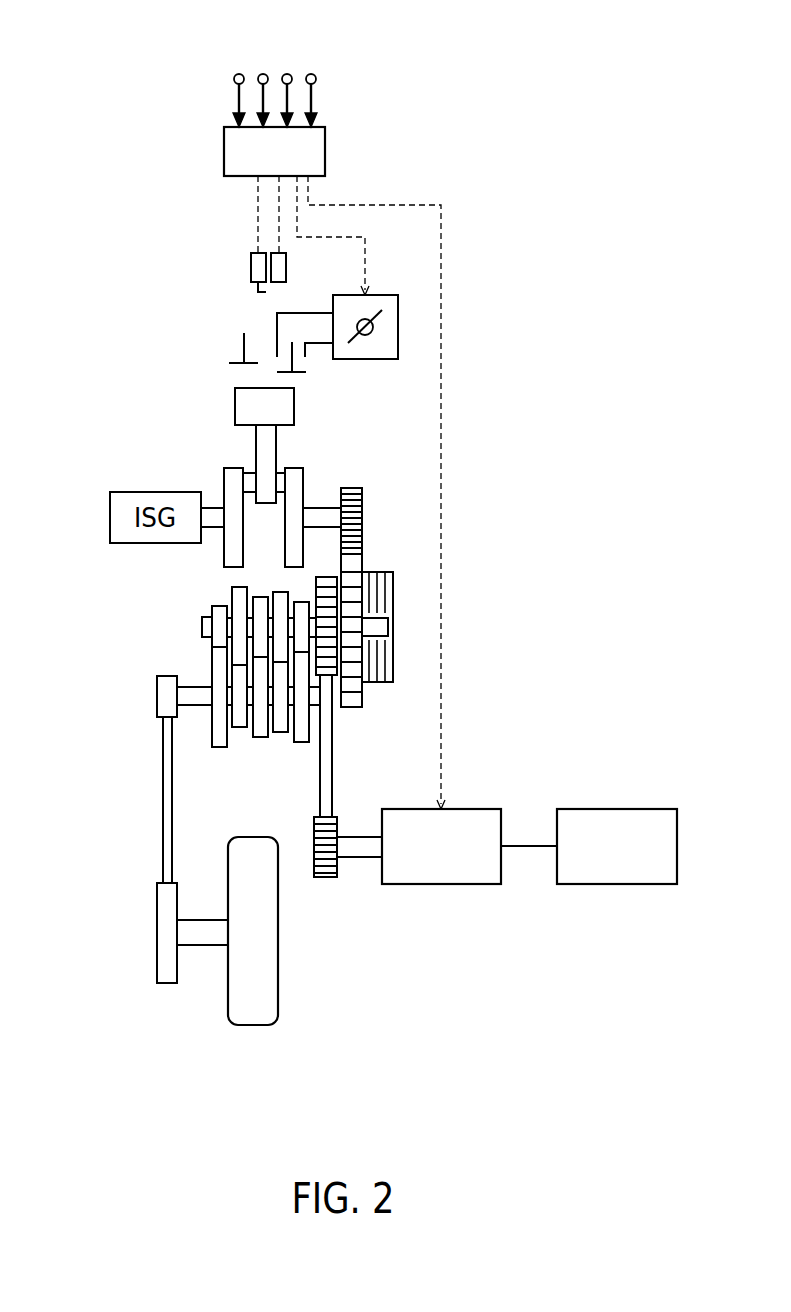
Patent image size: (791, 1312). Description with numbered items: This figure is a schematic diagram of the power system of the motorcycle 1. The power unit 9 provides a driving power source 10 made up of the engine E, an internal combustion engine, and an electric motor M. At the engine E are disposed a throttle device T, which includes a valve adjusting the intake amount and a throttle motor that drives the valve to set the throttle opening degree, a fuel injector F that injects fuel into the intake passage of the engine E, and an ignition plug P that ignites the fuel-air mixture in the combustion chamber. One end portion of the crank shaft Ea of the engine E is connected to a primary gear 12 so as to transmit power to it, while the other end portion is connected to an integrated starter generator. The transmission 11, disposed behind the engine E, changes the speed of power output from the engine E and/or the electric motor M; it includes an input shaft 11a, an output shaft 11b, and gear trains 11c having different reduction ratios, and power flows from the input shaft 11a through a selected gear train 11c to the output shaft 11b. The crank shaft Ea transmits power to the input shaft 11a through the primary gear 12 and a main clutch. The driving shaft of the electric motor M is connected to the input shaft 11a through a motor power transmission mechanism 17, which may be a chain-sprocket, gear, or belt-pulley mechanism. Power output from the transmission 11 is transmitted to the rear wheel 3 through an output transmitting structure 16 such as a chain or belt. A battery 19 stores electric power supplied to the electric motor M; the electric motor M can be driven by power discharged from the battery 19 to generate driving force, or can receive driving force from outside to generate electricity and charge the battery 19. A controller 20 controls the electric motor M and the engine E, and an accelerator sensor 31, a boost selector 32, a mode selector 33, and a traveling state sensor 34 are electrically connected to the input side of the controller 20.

The motorcycle 1 is at (562, 157).
The rear wheel 3 is at (252, 1017).
The power unit 9 is at (127, 262).
The driving power source 10 is at (553, 505).
The transmission 11 is at (167, 650).
The input shaft 11a is at (200, 629).
The output shaft 11b is at (188, 695).
The gear trains 11c is at (212, 657).
The primary gear 12 is at (363, 693).
The output transmitting structure 16 is at (162, 803).
The motor power transmission mechanism 17 is at (319, 788).
The battery 19 is at (615, 884).
The controller 20 is at (325, 147).
The accelerator sensor 31 is at (238, 72).
The boost selector 32 is at (263, 73).
The mode selector 33 is at (287, 73).
The traveling state sensor 34 is at (312, 73).
The engine E is at (342, 442).
The crank shaft Ea is at (323, 503).
The electric motor M is at (478, 807).
The ignition plug P is at (250, 268).
The fuel injector F is at (287, 268).
The throttle device T is at (370, 360).